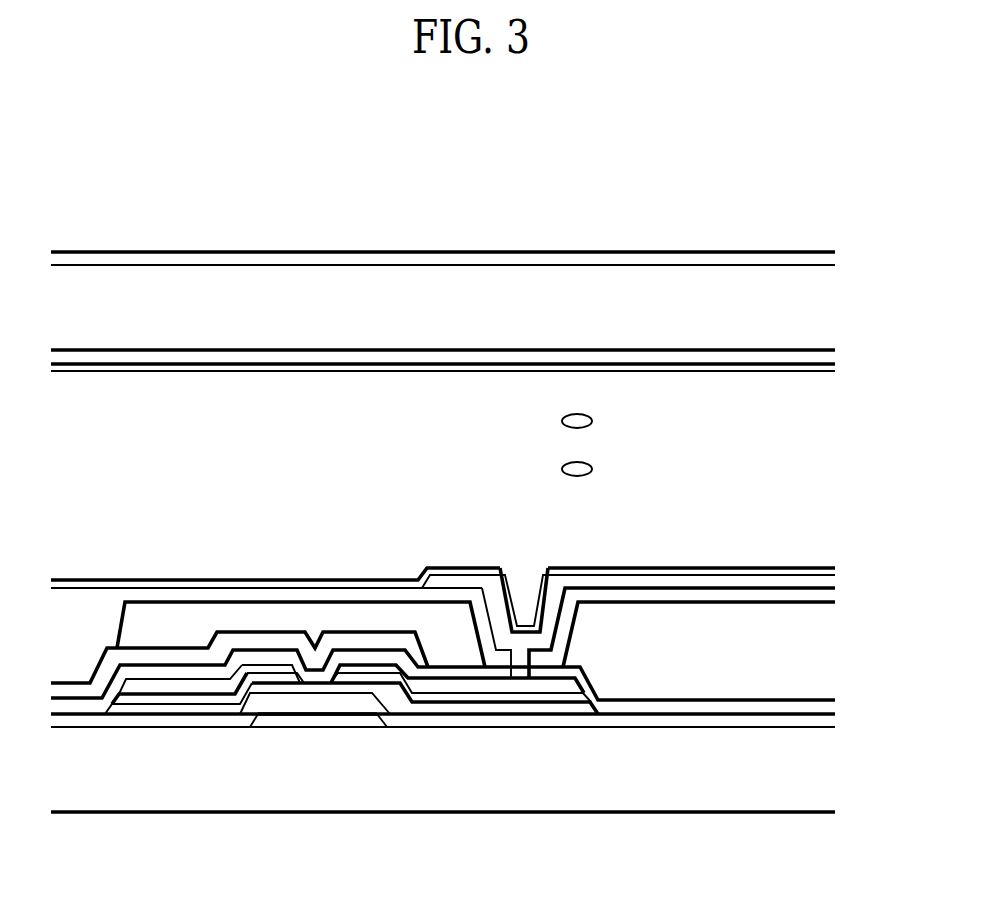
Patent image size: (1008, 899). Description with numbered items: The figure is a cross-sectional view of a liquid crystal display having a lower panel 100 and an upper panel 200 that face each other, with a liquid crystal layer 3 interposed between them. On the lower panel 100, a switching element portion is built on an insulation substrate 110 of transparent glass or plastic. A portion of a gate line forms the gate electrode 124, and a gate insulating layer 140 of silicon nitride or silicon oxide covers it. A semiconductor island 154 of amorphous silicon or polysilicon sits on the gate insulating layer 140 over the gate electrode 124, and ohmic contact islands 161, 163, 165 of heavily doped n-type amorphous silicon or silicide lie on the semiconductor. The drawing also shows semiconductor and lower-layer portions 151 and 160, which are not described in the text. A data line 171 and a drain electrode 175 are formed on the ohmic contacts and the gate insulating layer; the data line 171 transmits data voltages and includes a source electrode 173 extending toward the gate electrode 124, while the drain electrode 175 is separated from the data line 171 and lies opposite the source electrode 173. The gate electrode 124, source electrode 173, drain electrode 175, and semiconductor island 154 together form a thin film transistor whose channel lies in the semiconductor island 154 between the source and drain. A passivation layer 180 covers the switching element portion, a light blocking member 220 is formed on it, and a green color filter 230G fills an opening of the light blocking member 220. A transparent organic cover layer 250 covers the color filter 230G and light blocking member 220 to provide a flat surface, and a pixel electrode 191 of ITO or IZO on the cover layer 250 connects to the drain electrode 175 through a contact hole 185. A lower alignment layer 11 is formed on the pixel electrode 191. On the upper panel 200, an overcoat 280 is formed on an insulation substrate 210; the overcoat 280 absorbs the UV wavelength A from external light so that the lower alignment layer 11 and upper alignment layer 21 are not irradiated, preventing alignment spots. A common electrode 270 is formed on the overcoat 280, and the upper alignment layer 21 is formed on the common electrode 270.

The liquid crystal layer 3 is at (843, 386).
The lower alignment layer 11 is at (788, 566).
The upper alignment layer 21 is at (427, 372).
The lower panel 100 is at (843, 560).
The insulation substrate 110 is at (772, 783).
The gate electrode 124 is at (327, 722).
The gate insulating layer 140 is at (702, 720).
The semiconductor stripe 151 is at (128, 707).
The semiconductor island 154 is at (353, 697).
The lower passivation layer 160 is at (640, 707).
The ohmic contact island 161 is at (147, 697).
The ohmic contact island 163 is at (245, 700).
The ohmic contact island 165 is at (490, 697).
The data line 171 is at (168, 684).
The source electrode 173 is at (282, 676).
The drain electrode 175 is at (528, 686).
The passivation layer 180 is at (268, 653).
The contact hole 185 is at (521, 657).
The pixel electrode 191 is at (455, 582).
The upper panel 200 is at (843, 252).
The insulation substrate 210 is at (470, 258).
The light blocking member 220 is at (152, 653).
The color filter 230G is at (192, 617).
The cover layer 250 is at (362, 595).
The common electrode 270 is at (492, 356).
The overcoat 280 is at (343, 290).
The UV wavelength A is at (600, 312).